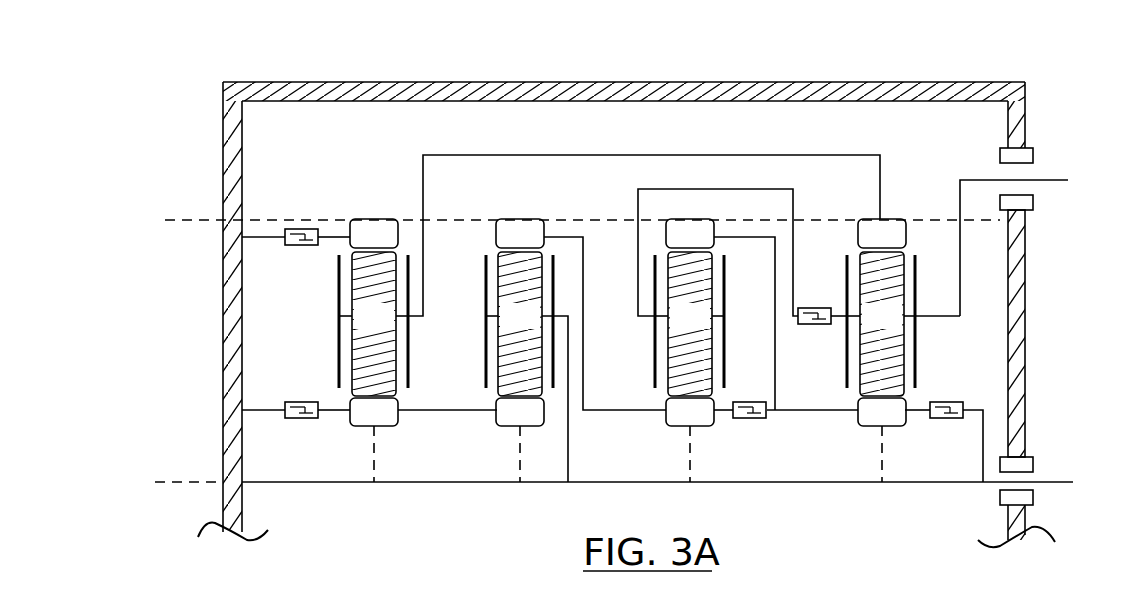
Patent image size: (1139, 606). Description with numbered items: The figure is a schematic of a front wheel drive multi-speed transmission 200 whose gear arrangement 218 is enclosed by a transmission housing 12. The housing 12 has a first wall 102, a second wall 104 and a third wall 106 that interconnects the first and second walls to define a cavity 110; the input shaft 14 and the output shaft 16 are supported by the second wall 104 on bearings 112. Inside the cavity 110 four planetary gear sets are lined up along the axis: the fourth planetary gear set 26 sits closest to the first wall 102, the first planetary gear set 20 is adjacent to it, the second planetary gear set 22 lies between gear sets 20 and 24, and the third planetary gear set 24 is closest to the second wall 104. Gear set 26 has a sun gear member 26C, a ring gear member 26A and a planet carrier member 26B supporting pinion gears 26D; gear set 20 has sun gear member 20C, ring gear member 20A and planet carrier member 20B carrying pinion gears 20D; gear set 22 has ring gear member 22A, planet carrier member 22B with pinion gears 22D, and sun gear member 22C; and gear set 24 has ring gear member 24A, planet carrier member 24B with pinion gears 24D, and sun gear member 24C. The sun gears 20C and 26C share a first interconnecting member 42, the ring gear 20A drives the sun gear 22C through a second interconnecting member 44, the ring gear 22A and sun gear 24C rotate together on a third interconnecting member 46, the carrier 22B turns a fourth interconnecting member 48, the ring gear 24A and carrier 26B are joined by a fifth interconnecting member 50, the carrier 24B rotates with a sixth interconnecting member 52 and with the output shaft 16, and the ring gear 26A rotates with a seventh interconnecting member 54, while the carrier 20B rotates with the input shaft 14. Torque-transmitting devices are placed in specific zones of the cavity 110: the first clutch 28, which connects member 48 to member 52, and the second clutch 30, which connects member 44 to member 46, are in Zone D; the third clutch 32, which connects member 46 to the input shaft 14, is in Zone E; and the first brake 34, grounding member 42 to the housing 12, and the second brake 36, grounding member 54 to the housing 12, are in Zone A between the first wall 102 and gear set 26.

The transmission 200 is at (852, 60).
The transmission housing 12 is at (606, 288).
The third wall 106 is at (441, 82).
The cavity 110 is at (490, 101).
The first wall 102 is at (223, 325).
The gear arrangement 218 is at (652, 113).
The bearings 112 is at (1035, 146).
The second wall 104 is at (1027, 310).
The input shaft 14 is at (1052, 481).
The output shaft 16 is at (1050, 180).
The fourth planetary gear set 26 is at (343, 313).
The ring gear member 26A is at (358, 245).
The planet carrier member 26B is at (337, 304).
The sun gear member 26C is at (358, 423).
The pinion gears 26D is at (358, 325).
The first planetary gear set 20 is at (497, 325).
The ring gear member 20A is at (504, 245).
The planet carrier member 20B is at (486, 326).
The sun gear member 20C is at (504, 423).
The pinion gears 20D is at (504, 325).
The second planetary gear set 22 is at (662, 301).
The ring gear member 22A is at (674, 245).
The planet carrier member 22B is at (655, 364).
The sun gear member 22C is at (674, 423).
The pinion gears 22D is at (674, 325).
The third planetary gear set 24 is at (909, 316).
The ring gear member 24A is at (866, 245).
The planet carrier member 24B is at (918, 325).
The sun gear member 24C is at (866, 423).
The pinion gears 24D is at (866, 325).
The seventh interconnecting member 54 is at (336, 236).
The second brake 36 is at (303, 246).
The first brake 34 is at (297, 401).
The first interconnecting member 42 is at (339, 412).
The fifth interconnecting member 50 is at (475, 155).
The second interconnecting member 44 is at (583, 366).
The third interconnecting member 46 is at (736, 238).
The fourth interconnecting member 48 is at (720, 189).
The second clutch 30 is at (739, 400).
The first clutch 28 is at (802, 306).
The sixth interconnecting member 52 is at (838, 324).
The third clutch 32 is at (933, 401).